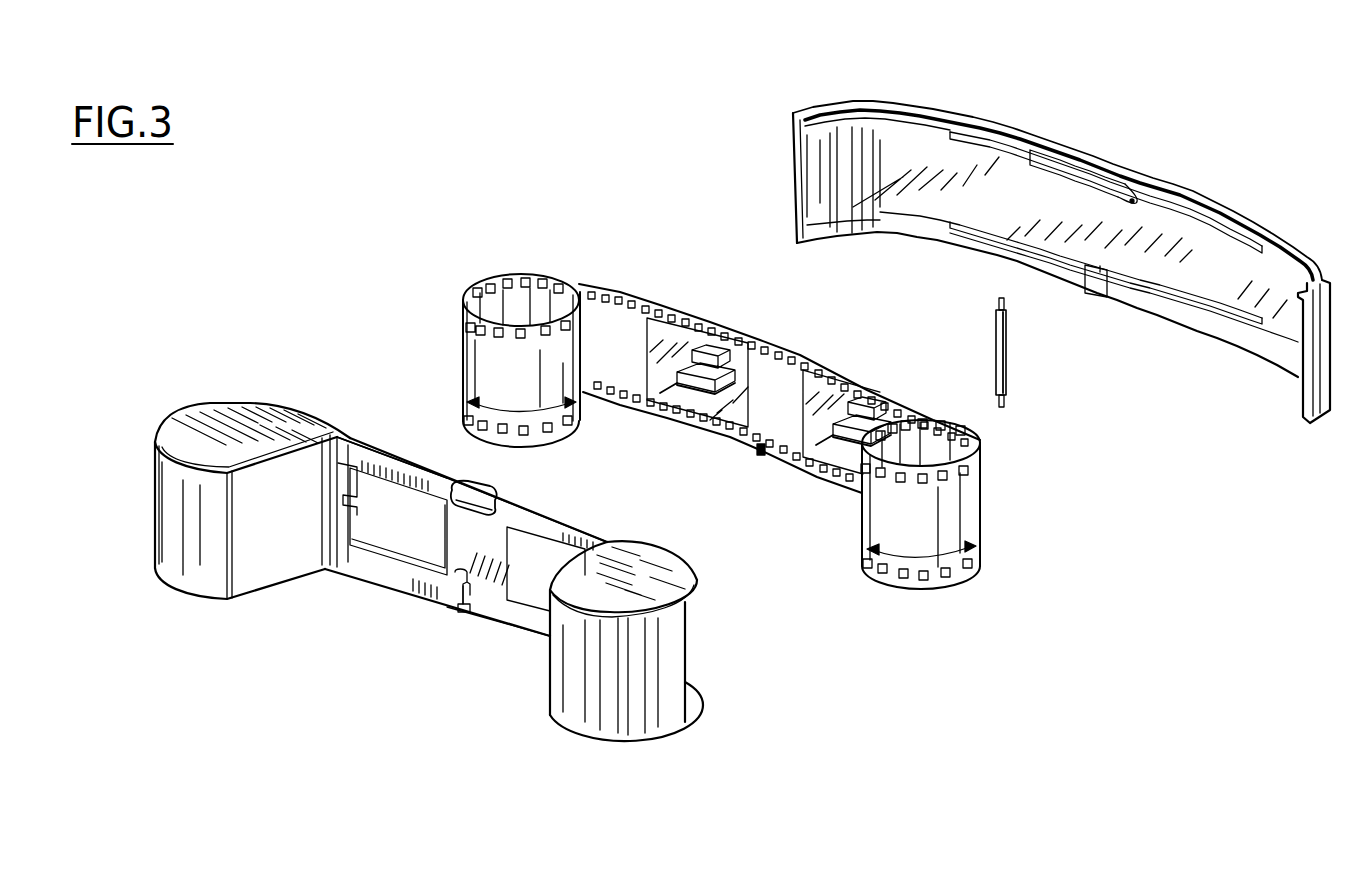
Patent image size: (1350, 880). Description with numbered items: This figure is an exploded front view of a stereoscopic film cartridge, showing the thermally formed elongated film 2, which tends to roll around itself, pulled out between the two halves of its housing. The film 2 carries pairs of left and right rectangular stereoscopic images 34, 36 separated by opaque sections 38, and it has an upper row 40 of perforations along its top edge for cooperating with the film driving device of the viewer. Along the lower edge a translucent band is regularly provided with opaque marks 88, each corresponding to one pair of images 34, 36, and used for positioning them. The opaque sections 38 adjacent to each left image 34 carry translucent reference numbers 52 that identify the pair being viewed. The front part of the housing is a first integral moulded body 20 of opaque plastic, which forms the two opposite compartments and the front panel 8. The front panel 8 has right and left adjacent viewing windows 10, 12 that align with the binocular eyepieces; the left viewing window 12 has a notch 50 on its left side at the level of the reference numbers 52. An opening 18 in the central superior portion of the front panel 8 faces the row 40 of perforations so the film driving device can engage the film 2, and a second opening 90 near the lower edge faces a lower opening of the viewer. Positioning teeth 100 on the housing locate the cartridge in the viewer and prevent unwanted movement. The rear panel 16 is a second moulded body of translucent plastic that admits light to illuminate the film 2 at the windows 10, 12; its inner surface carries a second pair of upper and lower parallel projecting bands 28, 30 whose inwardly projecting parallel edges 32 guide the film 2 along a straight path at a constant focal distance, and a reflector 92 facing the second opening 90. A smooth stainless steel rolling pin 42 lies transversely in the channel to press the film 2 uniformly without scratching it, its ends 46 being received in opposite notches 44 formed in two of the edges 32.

The elongated film 2 is at (631, 250).
The front panel 8 is at (490, 592).
The right viewing window 10 is at (553, 572).
The left viewing window 12 is at (410, 538).
The rear panel 16 is at (1061, 239).
The opening 18 is at (478, 492).
The first integral moulded body 20 is at (266, 608).
The upper projecting band 28 is at (903, 125).
The lower projecting band 30 is at (923, 232).
The inwardly projecting parallel edges 32 is at (1030, 158).
The left stereoscopic image 34 is at (677, 403).
The right stereoscopic image 36 is at (833, 460).
The opaque sections 38 is at (774, 409).
The upper row of perforations 40 is at (721, 332).
The rolling pin 42 is at (995, 347).
The notches 44 is at (1136, 292).
The ends of the rolling pin 46 is at (1005, 298).
The notch 50 is at (356, 458).
The translucent reference numbers 52 is at (630, 347).
The opaque marks 88 is at (763, 456).
The second opening 90 is at (457, 596).
The reflector 92 is at (1093, 294).
The positioning teeth 100 is at (458, 615).